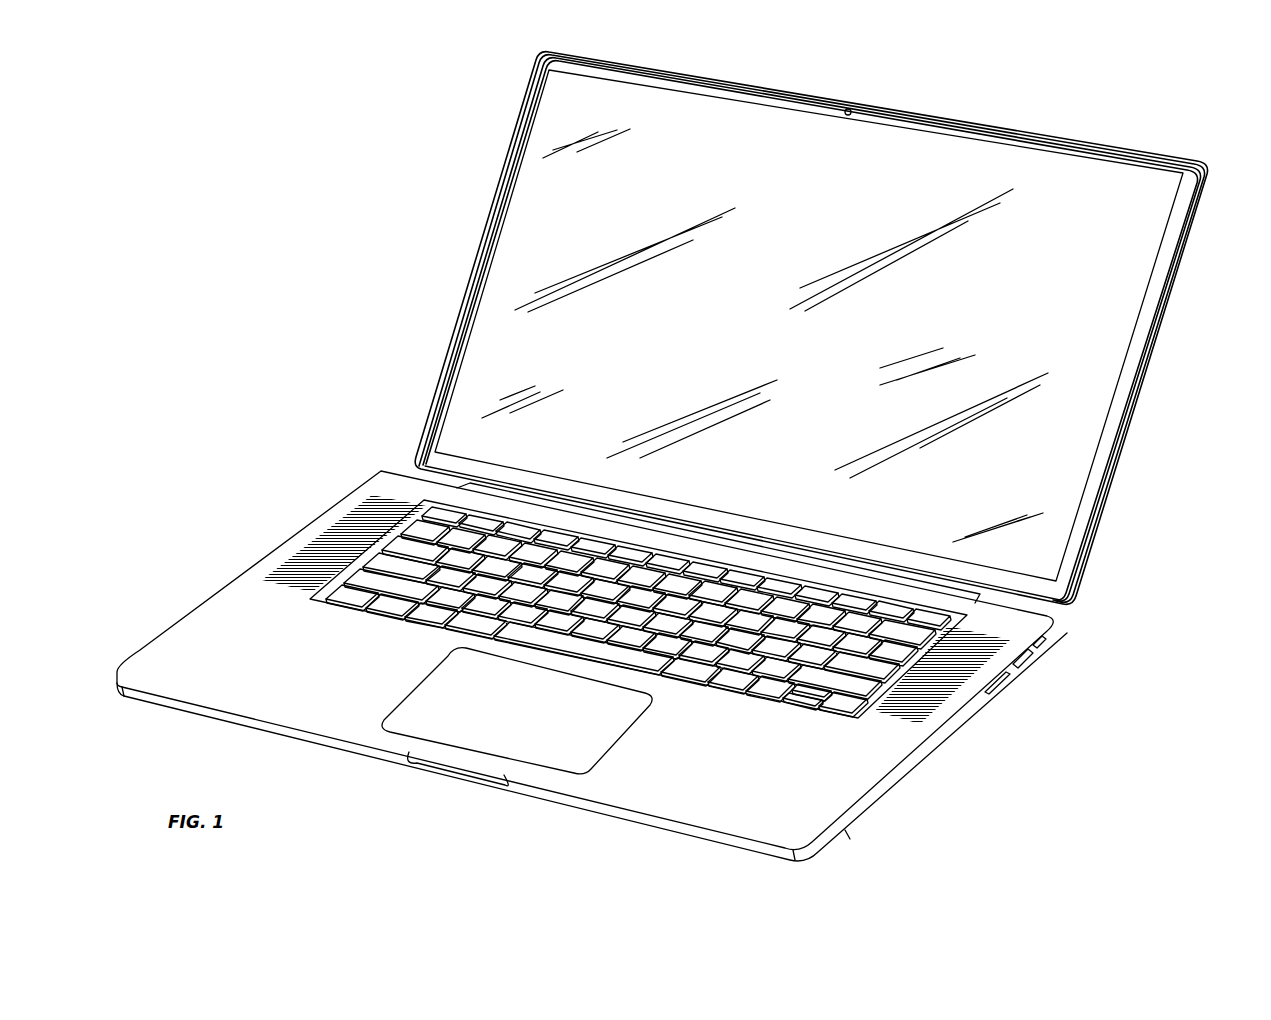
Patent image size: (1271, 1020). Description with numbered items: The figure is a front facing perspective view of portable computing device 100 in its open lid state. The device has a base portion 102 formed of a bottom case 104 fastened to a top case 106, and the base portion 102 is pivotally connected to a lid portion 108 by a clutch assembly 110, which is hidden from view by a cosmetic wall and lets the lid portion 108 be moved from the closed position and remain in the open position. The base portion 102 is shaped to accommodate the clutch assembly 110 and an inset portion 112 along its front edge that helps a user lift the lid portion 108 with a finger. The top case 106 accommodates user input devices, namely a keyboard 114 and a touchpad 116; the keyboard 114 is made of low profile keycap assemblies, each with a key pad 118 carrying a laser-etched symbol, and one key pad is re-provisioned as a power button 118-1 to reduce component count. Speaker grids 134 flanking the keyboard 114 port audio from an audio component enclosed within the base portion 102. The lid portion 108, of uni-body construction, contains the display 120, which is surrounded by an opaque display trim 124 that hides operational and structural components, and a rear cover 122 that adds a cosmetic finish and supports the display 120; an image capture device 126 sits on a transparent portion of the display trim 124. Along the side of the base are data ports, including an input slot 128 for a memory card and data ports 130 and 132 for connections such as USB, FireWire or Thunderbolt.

The portable computing device 100 is at (260, 121).
The base portion 102 is at (962, 769).
The bottom case 104 is at (893, 836).
The top case 106 is at (321, 668).
The lid portion 108 is at (481, 129).
The clutch assembly 110 is at (488, 482).
The inset portion 112 is at (439, 773).
The keyboard 114 is at (319, 481).
The touchpad 116 is at (538, 713).
The key pad 118 is at (434, 527).
The power button 118-1 is at (920, 613).
The display 120 is at (791, 329).
The rear cover 122 is at (1190, 385).
The display trim 124 is at (503, 197).
The image capture device 126 is at (853, 108).
The input slot 128 is at (996, 688).
The data port 130 is at (1033, 660).
The data port 132 is at (1053, 637).
The speaker grid 134 is at (276, 597).